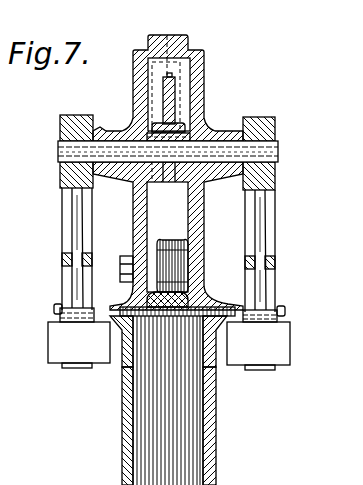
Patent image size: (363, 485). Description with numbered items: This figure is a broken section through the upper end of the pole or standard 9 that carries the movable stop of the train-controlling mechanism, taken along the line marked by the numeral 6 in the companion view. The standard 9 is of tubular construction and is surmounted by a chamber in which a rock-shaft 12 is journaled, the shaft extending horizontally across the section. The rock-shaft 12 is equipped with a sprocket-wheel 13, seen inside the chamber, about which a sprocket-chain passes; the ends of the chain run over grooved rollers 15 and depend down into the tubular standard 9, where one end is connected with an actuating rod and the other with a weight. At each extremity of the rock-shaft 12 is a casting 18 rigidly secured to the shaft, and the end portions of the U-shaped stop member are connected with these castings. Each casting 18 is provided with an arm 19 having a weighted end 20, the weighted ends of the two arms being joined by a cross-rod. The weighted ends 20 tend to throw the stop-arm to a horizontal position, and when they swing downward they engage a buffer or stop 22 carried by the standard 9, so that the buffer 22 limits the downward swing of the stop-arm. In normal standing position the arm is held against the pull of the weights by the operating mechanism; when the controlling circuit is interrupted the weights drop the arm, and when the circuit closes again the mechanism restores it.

The section line 6 is at (108, 25).
The standard 9 is at (218, 417).
The rock-shaft 12 is at (221, 153).
The sprocket-wheel 13 is at (176, 82).
The grooved rollers 15 is at (187, 255).
The castings 18 is at (62, 182).
The arms 19 is at (68, 228).
The weighted ends 20 is at (67, 285).
The buffer 22 is at (280, 345).